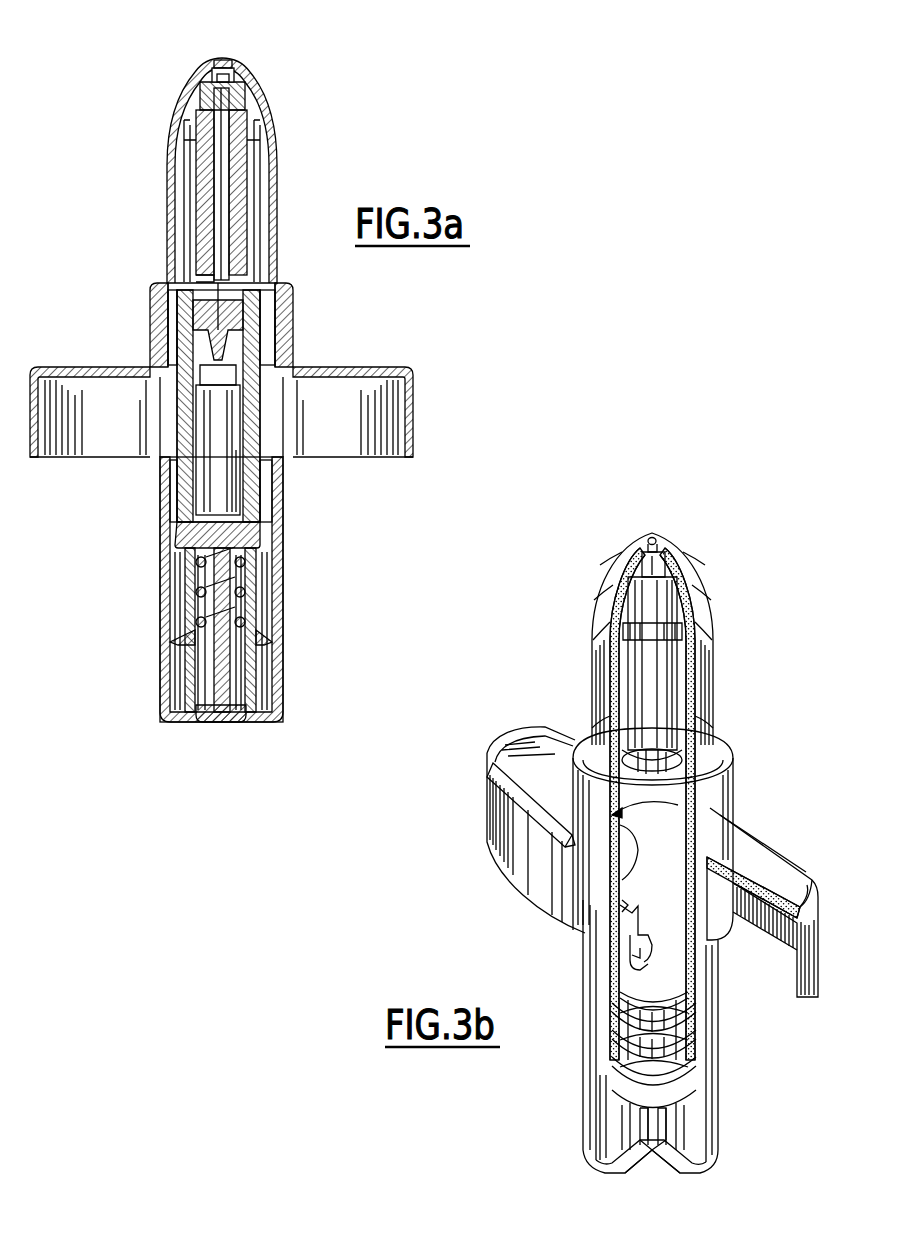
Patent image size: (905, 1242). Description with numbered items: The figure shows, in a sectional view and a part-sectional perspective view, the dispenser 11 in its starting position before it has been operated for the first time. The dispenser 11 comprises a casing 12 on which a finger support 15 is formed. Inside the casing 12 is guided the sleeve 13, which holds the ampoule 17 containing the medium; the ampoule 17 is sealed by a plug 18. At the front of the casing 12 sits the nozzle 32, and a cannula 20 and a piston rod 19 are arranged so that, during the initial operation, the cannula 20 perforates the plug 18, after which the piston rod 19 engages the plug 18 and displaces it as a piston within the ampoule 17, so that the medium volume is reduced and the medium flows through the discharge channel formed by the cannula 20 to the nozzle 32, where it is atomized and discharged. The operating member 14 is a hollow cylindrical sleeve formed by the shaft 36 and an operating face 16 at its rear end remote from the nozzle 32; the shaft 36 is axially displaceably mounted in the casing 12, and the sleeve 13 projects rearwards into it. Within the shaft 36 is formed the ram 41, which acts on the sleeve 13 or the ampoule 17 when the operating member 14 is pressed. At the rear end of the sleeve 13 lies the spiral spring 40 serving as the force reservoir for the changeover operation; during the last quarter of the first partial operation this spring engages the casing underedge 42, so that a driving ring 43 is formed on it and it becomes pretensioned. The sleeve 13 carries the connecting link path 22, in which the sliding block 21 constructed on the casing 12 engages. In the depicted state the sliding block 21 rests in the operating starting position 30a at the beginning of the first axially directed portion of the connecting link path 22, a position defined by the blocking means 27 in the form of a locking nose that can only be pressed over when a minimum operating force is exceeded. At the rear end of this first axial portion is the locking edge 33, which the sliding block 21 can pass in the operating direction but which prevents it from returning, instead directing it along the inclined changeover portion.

In FIG. 3A, the dispenser 11 is at (85, 258).
In FIG. 3B, the dispenser 11 is at (555, 665).
In FIG. 3A, the casing 12 is at (278, 352).
In FIG. 3B, the casing 12 is at (737, 806).
In FIG. 3A, the sleeve 13 is at (252, 447).
In FIG. 3B, the sleeve 13 is at (698, 983).
In FIG. 3A, the operating member 14 is at (302, 626).
In FIG. 3B, the operating member 14 is at (730, 1095).
In FIG. 3A, the finger support 15 is at (360, 368).
In FIG. 3B, the finger support 15 is at (778, 862).
In FIG. 3B, the operating face 16 is at (665, 1165).
In FIG. 3A, the ampoule 17 is at (170, 502).
In FIG. 3A, the plug 18 is at (190, 345).
In FIG. 3A, the piston rod 19 is at (229, 212).
In FIG. 3A, the cannula 20 is at (229, 170).
In FIG. 3B, the sliding block 21 is at (600, 800).
In FIG. 3B, the connecting link path 22 is at (622, 962).
In FIG. 3B, the blocking means 27 is at (618, 895).
In FIG. 3A, the operating starting position 30a is at (298, 696).
In FIG. 3B, the operating starting position 30a is at (720, 795).
In FIG. 3A, the nozzle 32 is at (218, 50).
In FIG. 3B, the nozzle 32 is at (655, 525).
In FIG. 3B, the locking edge 33 is at (612, 910).
In FIG. 3A, the shaft 36 is at (170, 596).
In FIG. 3B, the shaft 36 is at (590, 1074).
In FIG. 3A, the spiral spring 40 is at (262, 582).
In FIG. 3B, the spiral spring 40 is at (694, 1043).
In FIG. 3A, the ram 41 is at (185, 664).
In FIG. 3B, the ram 41 is at (618, 1122).
In FIG. 3A, the casing underedge 42 is at (174, 547).
In FIG. 3B, the casing underedge 42 is at (606, 992).
In FIG. 3A, the driving ring 43 is at (172, 642).
In FIG. 3B, the driving ring 43 is at (600, 1112).